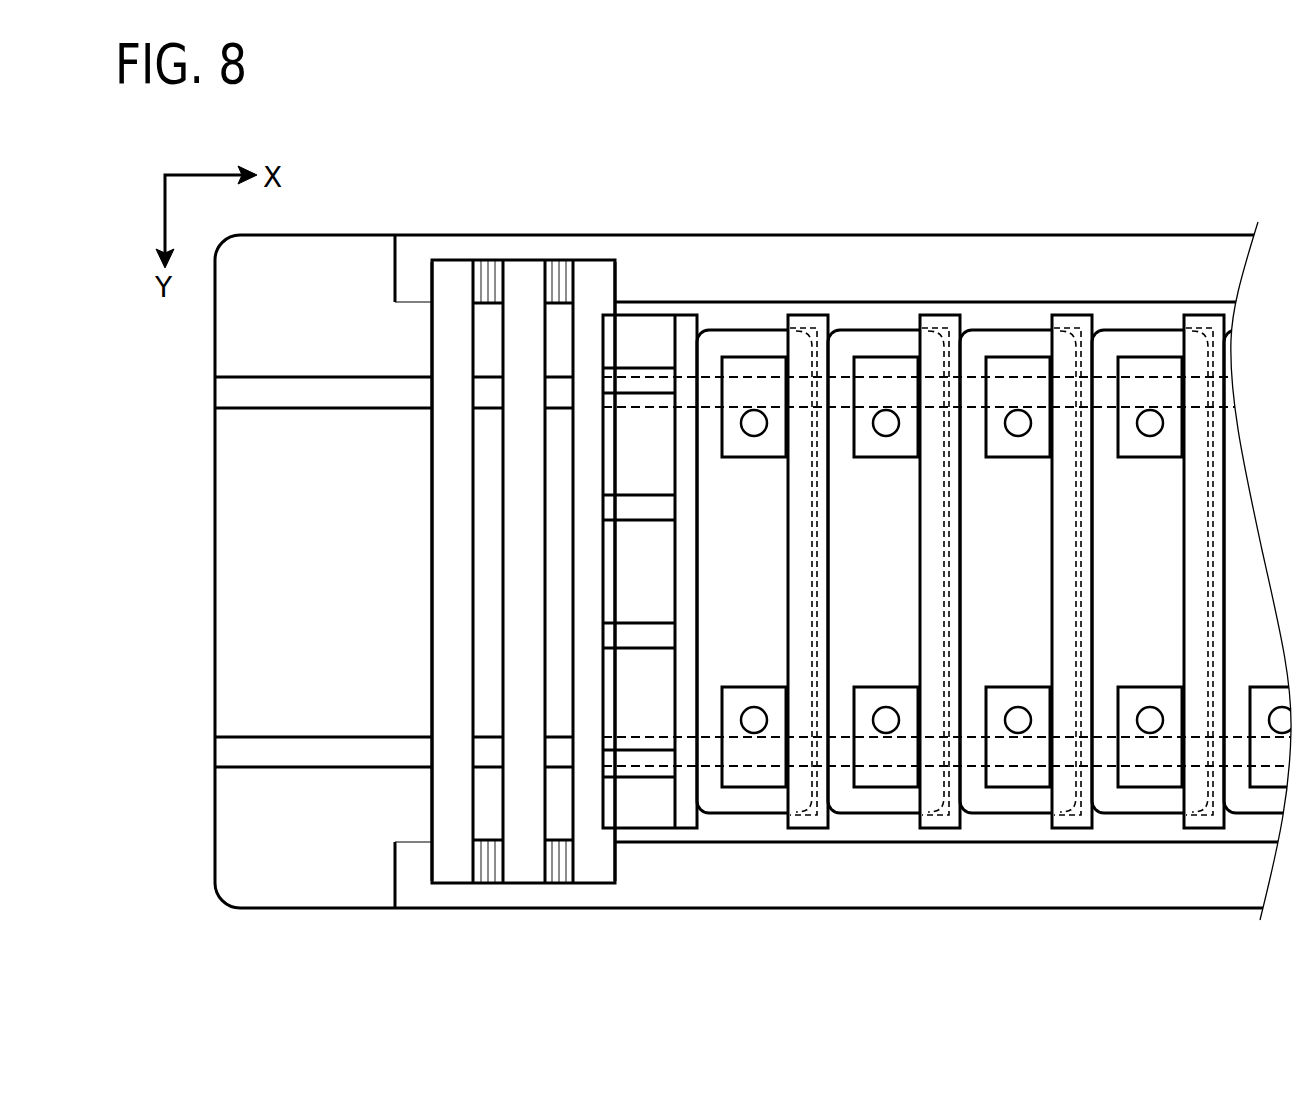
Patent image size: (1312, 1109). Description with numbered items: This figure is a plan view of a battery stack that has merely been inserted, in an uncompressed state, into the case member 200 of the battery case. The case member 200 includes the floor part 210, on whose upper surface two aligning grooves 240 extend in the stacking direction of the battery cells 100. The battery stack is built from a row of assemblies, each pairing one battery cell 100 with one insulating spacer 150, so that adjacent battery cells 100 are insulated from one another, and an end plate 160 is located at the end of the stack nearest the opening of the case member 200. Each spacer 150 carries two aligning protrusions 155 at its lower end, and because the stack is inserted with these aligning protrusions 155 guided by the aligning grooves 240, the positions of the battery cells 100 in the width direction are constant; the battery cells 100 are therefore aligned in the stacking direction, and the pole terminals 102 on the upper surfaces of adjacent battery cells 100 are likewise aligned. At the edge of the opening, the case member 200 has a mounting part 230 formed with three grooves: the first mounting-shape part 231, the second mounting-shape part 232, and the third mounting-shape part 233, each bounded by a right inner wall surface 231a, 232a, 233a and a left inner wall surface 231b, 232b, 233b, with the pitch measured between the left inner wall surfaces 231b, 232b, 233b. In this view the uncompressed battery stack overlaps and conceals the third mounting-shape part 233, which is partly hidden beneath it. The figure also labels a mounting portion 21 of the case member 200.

The case member 200 is at (1180, 258).
The floor part 210 is at (248, 558).
The mounting portion 21 is at (1130, 320).
The aligning grooves 240 is at (250, 378).
The mounting part 230 is at (504, 544).
The first mounting-shape part 231 is at (391, 556).
The right inner wall surface of the first mounting-shape part 231a is at (472, 312).
The left inner wall surface of the first mounting-shape part 231b is at (432, 343).
The second mounting-shape part 232 is at (522, 553).
The right inner wall surface of the second mounting-shape part 232a is at (543, 312).
The left inner wall surface of the second mounting-shape part 232b is at (505, 336).
The third mounting-shape part 233 is at (624, 555).
The right inner wall surface of the third mounting-shape part 233a is at (614, 313).
The left inner wall surface of the third mounting-shape part 233b is at (577, 330).
The end plate 160 is at (647, 813).
The battery cells 100 is at (758, 800).
The pole terminals 102 is at (753, 410).
The spacers 150 is at (818, 823).
The aligning protrusions 155 is at (796, 396).